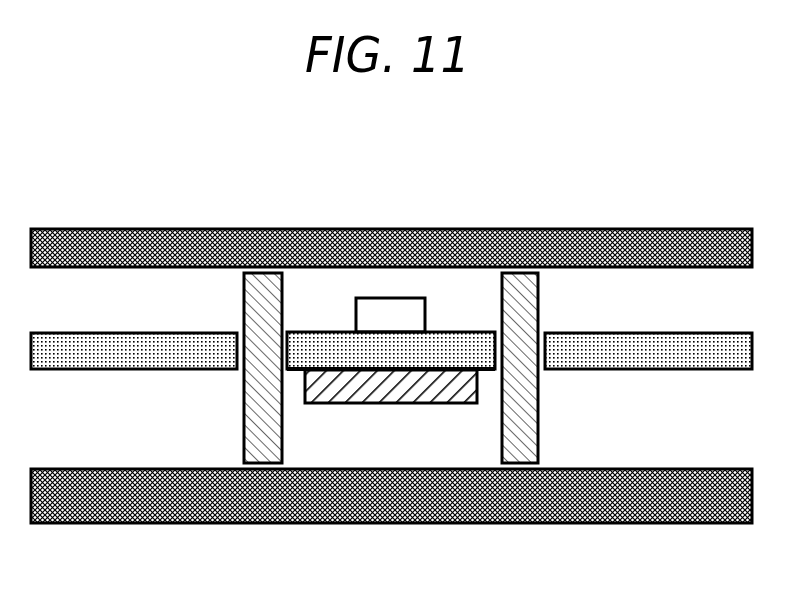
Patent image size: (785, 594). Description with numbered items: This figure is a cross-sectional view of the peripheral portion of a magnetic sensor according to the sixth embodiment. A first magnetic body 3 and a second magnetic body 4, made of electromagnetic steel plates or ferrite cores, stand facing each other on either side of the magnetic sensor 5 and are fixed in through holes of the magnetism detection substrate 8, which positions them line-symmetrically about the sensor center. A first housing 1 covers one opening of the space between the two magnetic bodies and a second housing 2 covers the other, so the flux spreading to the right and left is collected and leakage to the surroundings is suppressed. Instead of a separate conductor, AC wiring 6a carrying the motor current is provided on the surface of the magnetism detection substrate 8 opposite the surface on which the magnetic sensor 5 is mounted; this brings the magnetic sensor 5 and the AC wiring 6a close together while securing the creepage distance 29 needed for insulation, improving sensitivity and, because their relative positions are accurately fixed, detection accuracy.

The first housing 1 is at (590, 229).
The second housing 2 is at (118, 504).
The first magnetic body 3 is at (257, 422).
The second magnetic body 4 is at (527, 425).
The magnetic sensor 5 is at (393, 317).
The AC wiring 6a is at (390, 390).
The magnetism detection substrate 8 is at (118, 355).
The creepage distance 29 is at (443, 332).